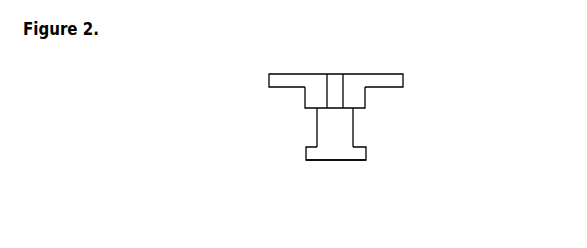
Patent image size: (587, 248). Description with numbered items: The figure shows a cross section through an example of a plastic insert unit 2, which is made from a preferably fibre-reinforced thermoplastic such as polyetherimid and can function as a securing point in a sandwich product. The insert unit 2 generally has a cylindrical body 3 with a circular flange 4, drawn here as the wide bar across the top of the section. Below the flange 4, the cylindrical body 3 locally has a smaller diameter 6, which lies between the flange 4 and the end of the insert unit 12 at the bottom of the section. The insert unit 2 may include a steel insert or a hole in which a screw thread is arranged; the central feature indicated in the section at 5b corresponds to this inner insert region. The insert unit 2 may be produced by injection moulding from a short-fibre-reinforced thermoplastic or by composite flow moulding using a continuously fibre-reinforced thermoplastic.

The thermoplastic insert unit 2 is at (327, 127).
The circular flange 4 is at (393, 73).
The channel 5b is at (327, 100).
The smaller diameter 6 is at (354, 134).
The cylindrical body 3 is at (313, 157).
The end of the insert unit 12 is at (348, 161).